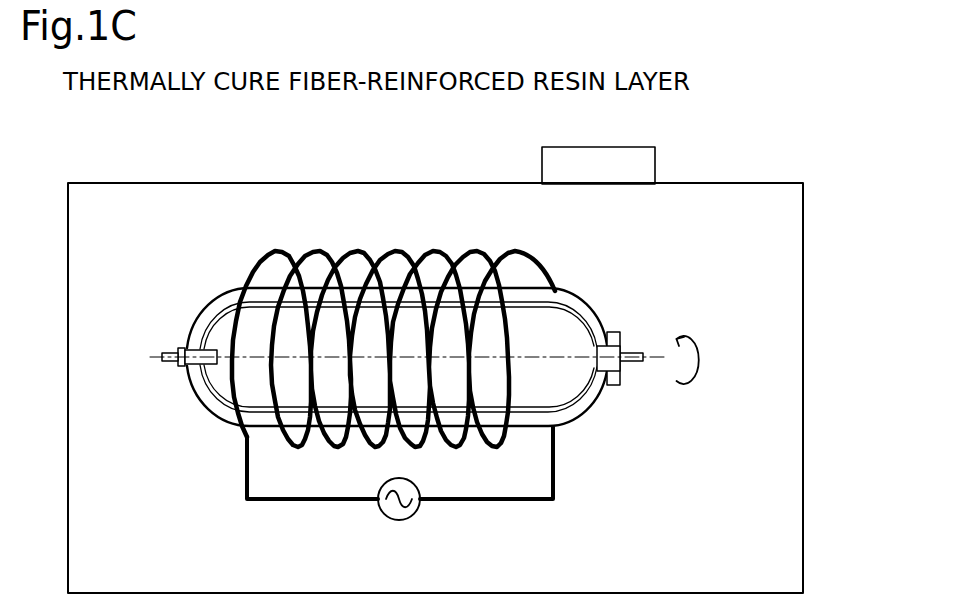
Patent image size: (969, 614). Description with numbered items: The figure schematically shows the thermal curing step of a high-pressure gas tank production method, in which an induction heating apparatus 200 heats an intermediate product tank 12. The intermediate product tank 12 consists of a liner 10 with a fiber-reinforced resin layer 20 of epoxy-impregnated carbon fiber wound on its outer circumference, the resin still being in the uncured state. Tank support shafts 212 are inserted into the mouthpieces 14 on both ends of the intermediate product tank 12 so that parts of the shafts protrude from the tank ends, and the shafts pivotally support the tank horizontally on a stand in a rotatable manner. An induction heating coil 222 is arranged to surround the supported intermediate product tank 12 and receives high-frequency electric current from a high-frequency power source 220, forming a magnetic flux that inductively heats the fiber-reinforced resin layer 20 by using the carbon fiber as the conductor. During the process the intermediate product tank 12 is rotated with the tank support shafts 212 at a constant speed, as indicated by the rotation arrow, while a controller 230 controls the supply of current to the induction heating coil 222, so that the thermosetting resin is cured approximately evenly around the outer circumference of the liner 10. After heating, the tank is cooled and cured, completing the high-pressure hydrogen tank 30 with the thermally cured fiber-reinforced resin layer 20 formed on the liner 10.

The induction heating apparatus 200 is at (713, 184).
The controller 230 is at (626, 147).
The intermediate product tank 12 is at (459, 358).
The liner 10 is at (230, 398).
The fiber-reinforced resin layer 20 is at (397, 357).
The induction heating coil 222 is at (490, 258).
The high-frequency power source 220 is at (412, 516).
The tank support shafts 212 is at (200, 363).
The mouthpieces 14 is at (207, 366).
The high-pressure hydrogen tank 30 is at (670, 268).